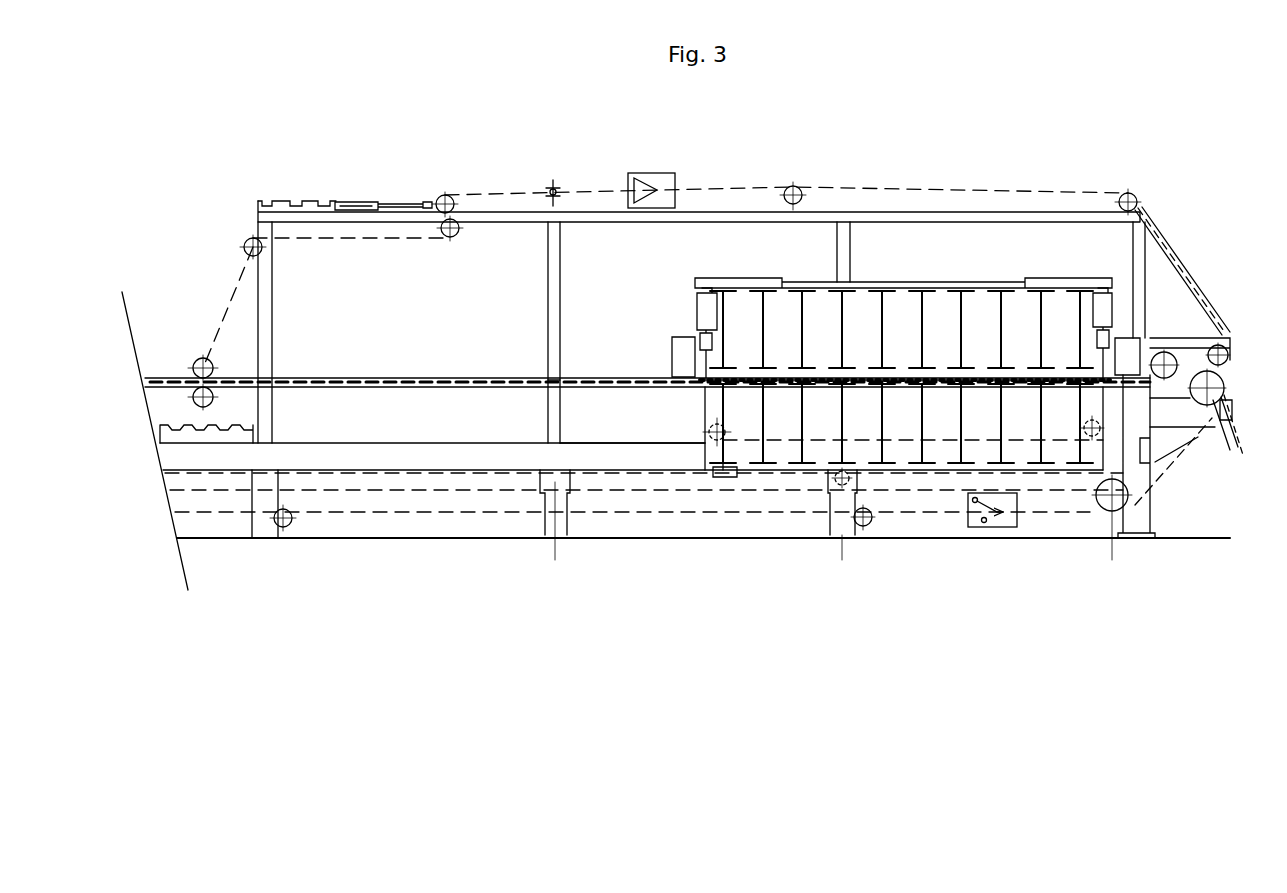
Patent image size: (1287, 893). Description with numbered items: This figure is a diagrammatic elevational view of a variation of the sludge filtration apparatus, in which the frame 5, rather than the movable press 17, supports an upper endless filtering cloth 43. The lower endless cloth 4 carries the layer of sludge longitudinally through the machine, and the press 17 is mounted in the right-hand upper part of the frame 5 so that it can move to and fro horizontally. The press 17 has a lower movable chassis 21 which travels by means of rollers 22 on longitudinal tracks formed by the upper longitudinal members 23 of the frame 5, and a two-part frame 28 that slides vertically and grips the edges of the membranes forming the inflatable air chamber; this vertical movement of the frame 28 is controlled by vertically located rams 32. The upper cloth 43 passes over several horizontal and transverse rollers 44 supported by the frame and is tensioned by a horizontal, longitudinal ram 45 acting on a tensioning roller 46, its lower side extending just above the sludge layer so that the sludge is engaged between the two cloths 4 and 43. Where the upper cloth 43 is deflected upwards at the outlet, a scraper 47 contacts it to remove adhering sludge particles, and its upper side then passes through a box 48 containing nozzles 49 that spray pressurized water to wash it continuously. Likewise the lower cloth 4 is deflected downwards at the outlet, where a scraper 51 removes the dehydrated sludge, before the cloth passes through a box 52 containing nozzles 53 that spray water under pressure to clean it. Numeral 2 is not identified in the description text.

The web 2 is at (170, 378).
The lower endless cloth 4 is at (388, 386).
The frame 5 is at (542, 413).
The press 17 is at (903, 412).
The lower movable chassis 21 is at (886, 426).
The rollers 22 is at (710, 432).
The upper longitudinal members 23 is at (588, 455).
The frame 28 is at (675, 340).
The rams 32 is at (697, 310).
The upper endless filtering cloth 43 is at (930, 188).
The rollers 44 is at (200, 360).
The ram 45 is at (357, 198).
The tensioning roller 46 is at (445, 195).
The scraper 47 is at (1219, 345).
The box 48 is at (660, 173).
The nozzles 49 is at (632, 200).
The scraper 51 is at (1220, 420).
The box 52 is at (1005, 527).
The nozzles 53 is at (984, 522).